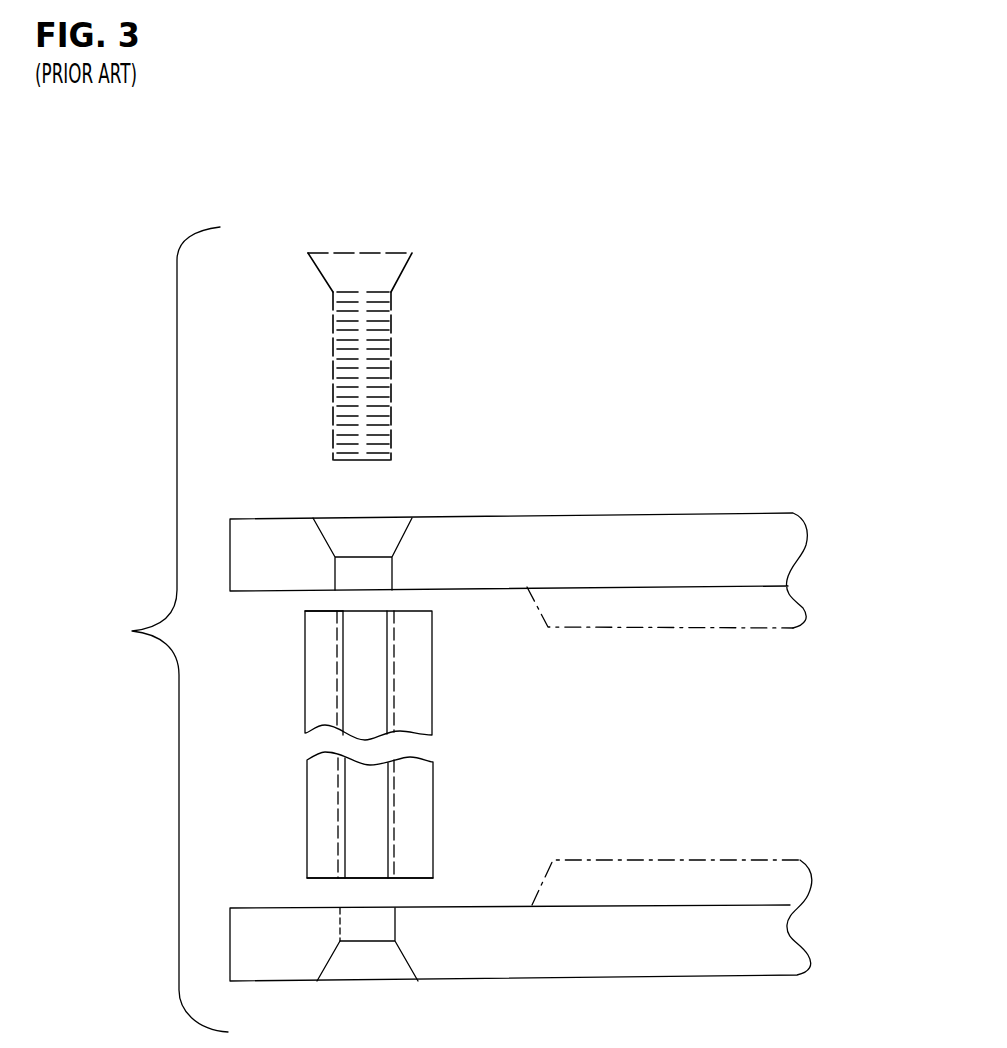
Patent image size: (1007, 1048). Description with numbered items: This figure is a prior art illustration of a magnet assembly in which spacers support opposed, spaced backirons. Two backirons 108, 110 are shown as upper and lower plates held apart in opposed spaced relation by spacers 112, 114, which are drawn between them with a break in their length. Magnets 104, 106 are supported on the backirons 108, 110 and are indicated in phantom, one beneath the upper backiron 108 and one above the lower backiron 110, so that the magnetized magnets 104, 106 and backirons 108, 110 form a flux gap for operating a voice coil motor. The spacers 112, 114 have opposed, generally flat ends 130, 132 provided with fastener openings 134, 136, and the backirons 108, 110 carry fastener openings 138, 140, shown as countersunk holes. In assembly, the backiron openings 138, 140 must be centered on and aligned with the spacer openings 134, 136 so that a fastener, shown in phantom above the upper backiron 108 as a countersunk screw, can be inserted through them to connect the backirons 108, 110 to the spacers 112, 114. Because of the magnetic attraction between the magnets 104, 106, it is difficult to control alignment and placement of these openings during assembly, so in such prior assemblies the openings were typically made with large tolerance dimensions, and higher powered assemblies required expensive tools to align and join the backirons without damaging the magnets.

The magnet 104 is at (685, 620).
The magnet 106 is at (672, 865).
The backiron 108 is at (617, 523).
The backiron 110 is at (623, 955).
The spacer 112 is at (380, 682).
The spacer 114 is at (380, 682).
The flat end 130 is at (405, 612).
The flat end 132 is at (377, 879).
The fastener opening 134 is at (353, 623).
The fastener opening 136 is at (363, 868).
The fastener opening 138 is at (357, 523).
The fastener opening 140 is at (358, 970).